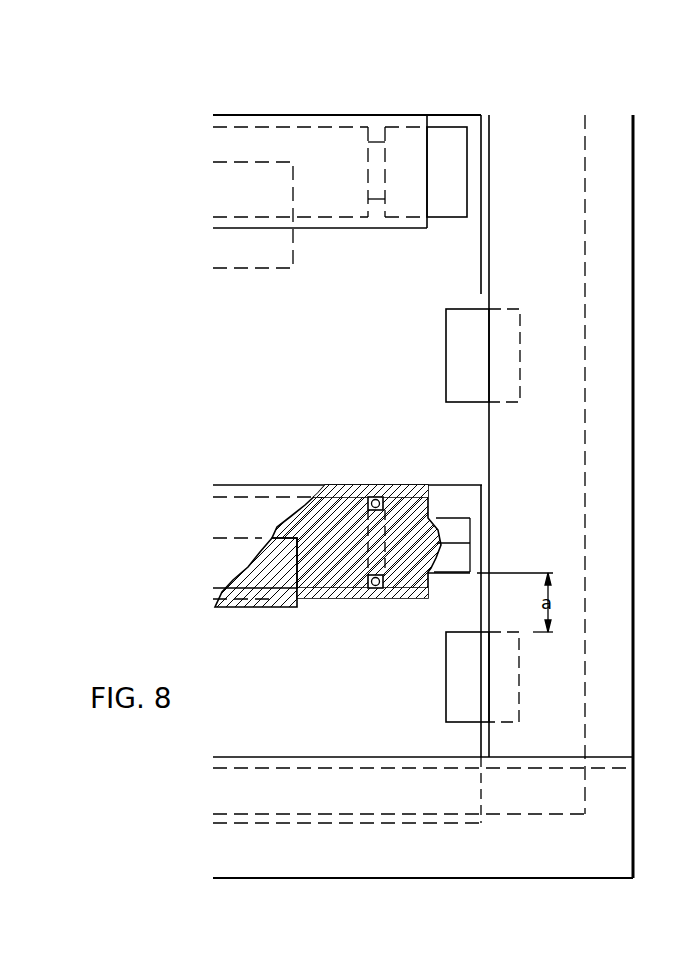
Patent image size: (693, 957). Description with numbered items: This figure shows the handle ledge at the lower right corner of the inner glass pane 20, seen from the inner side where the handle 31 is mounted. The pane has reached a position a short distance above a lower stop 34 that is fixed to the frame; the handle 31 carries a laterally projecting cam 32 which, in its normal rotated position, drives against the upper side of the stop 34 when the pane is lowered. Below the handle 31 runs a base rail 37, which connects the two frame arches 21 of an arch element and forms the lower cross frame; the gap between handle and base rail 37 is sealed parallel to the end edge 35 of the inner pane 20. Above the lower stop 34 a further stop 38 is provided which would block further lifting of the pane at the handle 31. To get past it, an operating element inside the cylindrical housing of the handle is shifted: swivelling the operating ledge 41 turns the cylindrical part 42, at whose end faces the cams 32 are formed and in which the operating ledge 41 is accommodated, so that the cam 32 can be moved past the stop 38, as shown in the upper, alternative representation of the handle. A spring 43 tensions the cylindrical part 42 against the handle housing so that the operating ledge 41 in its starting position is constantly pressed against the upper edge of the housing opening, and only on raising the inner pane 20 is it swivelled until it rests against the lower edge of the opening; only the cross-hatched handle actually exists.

The inner glass pane 20 is at (585, 320).
The frame arch 21 is at (633, 437).
The handle 31 is at (253, 484).
The cam 32 is at (467, 170).
The lower stop 34 is at (446, 680).
The end edge 35 is at (560, 815).
The base rail 37 is at (627, 790).
The further stop 38 is at (450, 360).
The operating ledge 41 is at (273, 607).
The cylindrical part 42 is at (340, 549).
The spring 43 is at (375, 590).